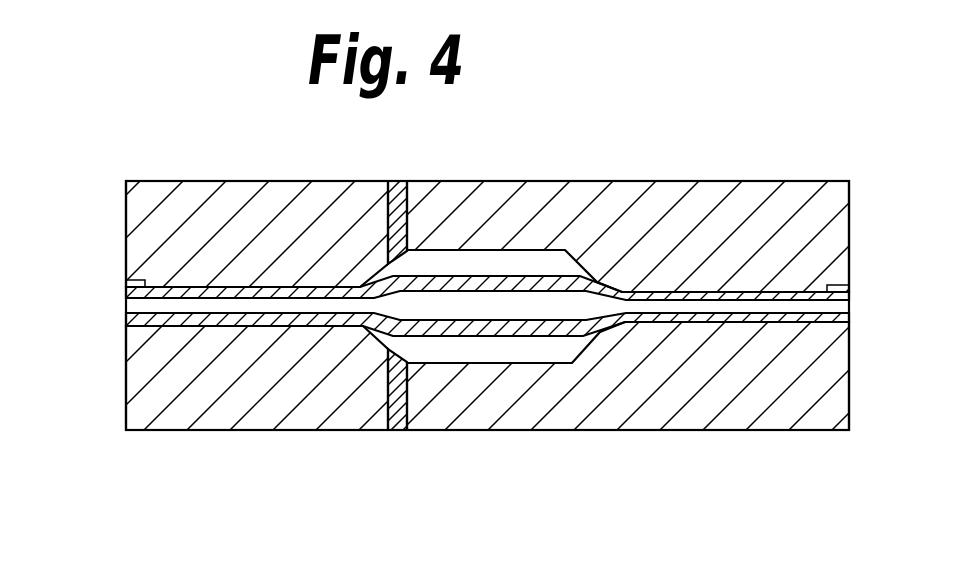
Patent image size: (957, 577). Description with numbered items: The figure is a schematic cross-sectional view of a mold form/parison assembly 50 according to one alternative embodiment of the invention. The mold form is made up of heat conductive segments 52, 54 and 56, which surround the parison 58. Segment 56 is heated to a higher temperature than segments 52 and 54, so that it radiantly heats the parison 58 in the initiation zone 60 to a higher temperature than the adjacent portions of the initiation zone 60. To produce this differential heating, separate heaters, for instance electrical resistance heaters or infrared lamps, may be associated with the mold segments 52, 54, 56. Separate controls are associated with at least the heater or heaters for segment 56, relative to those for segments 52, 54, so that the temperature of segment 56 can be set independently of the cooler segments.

The mold form/parison assembly 50 is at (656, 466).
The heat conductive segment 52 is at (666, 195).
The heat conductive segment 54 is at (203, 418).
The heat conductive segment 56 is at (400, 243).
The parison 58 is at (513, 337).
The initiation zone 60 is at (415, 418).